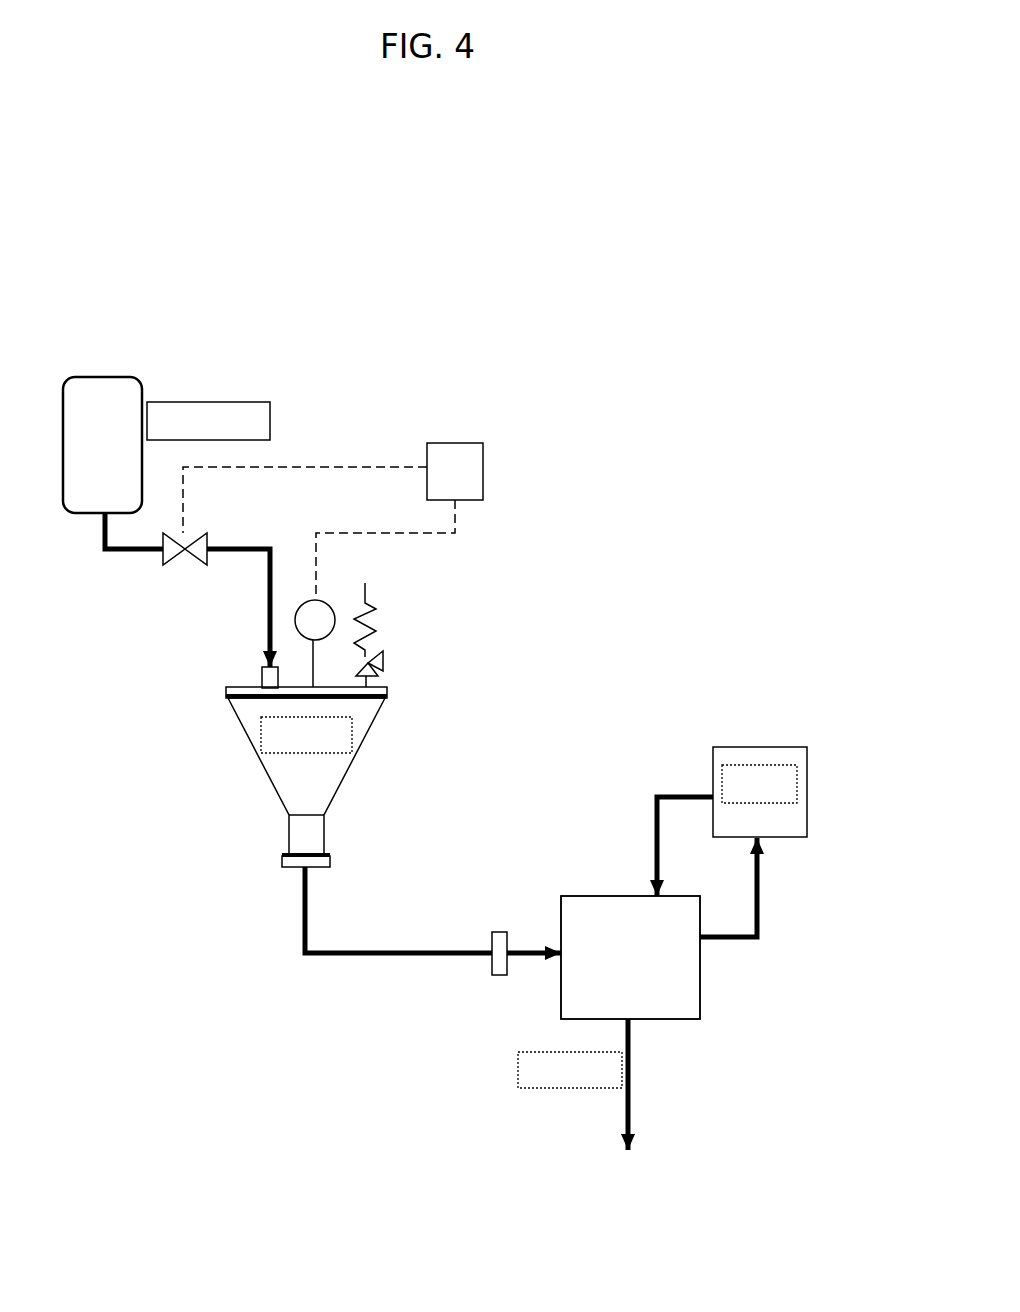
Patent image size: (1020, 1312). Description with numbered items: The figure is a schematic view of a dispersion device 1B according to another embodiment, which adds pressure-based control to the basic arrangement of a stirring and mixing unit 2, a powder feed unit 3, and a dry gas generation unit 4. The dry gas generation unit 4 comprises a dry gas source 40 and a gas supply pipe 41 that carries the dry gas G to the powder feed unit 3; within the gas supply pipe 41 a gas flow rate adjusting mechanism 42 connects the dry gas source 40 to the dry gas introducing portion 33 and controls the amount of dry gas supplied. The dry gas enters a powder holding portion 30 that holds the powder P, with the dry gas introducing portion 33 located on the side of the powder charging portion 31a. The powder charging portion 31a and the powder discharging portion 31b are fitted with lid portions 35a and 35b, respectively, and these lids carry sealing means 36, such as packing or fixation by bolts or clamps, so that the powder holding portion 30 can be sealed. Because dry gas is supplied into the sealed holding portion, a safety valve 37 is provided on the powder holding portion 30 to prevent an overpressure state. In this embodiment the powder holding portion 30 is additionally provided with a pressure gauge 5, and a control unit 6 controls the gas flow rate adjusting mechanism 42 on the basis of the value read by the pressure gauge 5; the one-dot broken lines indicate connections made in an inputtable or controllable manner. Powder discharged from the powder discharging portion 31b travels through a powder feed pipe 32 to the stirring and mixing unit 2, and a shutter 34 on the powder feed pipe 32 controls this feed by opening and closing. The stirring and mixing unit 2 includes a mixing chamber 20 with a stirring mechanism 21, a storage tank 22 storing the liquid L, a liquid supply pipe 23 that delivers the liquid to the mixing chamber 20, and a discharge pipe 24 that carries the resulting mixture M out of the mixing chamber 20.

The dispersion device 1B is at (175, 295).
The stirring and mixing unit 2 is at (710, 1117).
The powder feed unit 3 is at (212, 975).
The dry gas generation unit 4 is at (240, 380).
The pressure gauge 5 is at (330, 605).
The control unit 6 is at (371, 508).
The mixing chamber 20 is at (688, 992).
The stirring mechanism 21 is at (673, 979).
The storage tank 22 is at (758, 762).
The liquid supply pipe 23 is at (676, 795).
The discharge pipe 24 is at (624, 1113).
The powder holding portion 30 is at (258, 757).
The powder charging portion 31a is at (226, 700).
The powder discharging portion 31b is at (280, 856).
The powder feed pipe 32 is at (365, 958).
The dry gas introducing portion 33 is at (260, 680).
The shutter 34 is at (500, 978).
The lid portion 35a is at (390, 692).
The lid portion 35b is at (332, 862).
The sealing means 36 is at (353, 704).
The safety valve 37 is at (387, 638).
The dry gas source 40 is at (108, 392).
The gas supply pipe 41 is at (270, 541).
The gas flow rate adjusting mechanism 42 is at (175, 568).